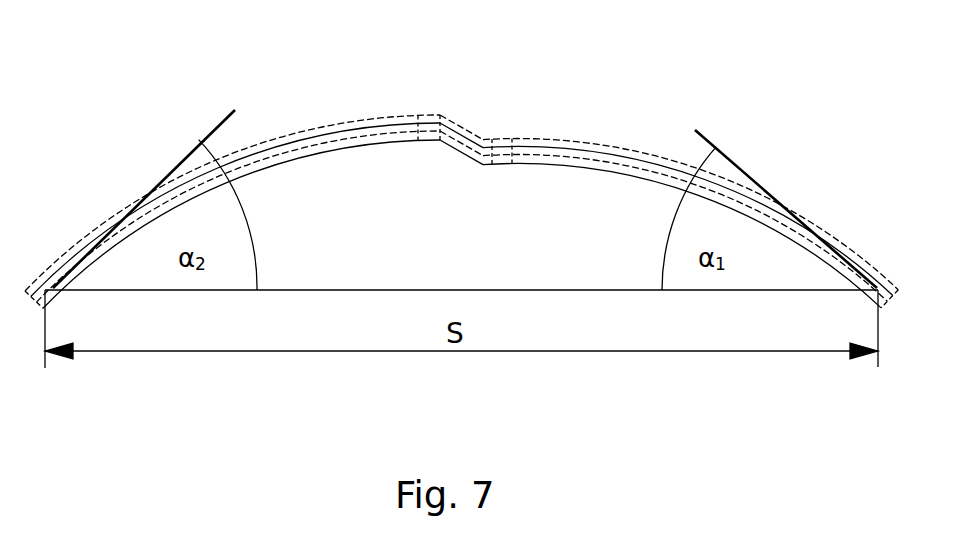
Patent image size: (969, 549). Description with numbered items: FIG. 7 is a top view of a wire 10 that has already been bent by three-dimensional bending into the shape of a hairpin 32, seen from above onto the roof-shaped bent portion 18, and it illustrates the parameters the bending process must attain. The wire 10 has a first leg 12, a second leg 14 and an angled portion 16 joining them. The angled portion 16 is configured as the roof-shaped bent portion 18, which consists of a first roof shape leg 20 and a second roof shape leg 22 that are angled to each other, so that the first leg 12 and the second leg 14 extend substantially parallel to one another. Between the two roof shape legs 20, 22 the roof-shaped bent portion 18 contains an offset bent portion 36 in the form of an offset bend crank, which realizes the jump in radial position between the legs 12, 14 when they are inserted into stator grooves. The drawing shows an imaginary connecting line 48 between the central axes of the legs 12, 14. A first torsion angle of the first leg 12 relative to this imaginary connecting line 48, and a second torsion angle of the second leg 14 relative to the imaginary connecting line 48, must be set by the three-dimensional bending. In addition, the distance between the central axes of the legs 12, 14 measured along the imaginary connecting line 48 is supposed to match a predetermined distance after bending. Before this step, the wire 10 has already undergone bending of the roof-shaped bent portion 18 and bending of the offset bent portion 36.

The wire 10 is at (618, 148).
The first leg 12 is at (872, 265).
The second leg 14 is at (53, 263).
The angled portion 16 is at (723, 180).
The roof-shaped bent portion 18 is at (365, 108).
The first roof shape leg 20 is at (578, 168).
The second roof shape leg 22 is at (293, 145).
The hairpin 32 is at (158, 95).
The offset bent portion 36 is at (457, 138).
The imaginary connecting line 48 is at (555, 290).